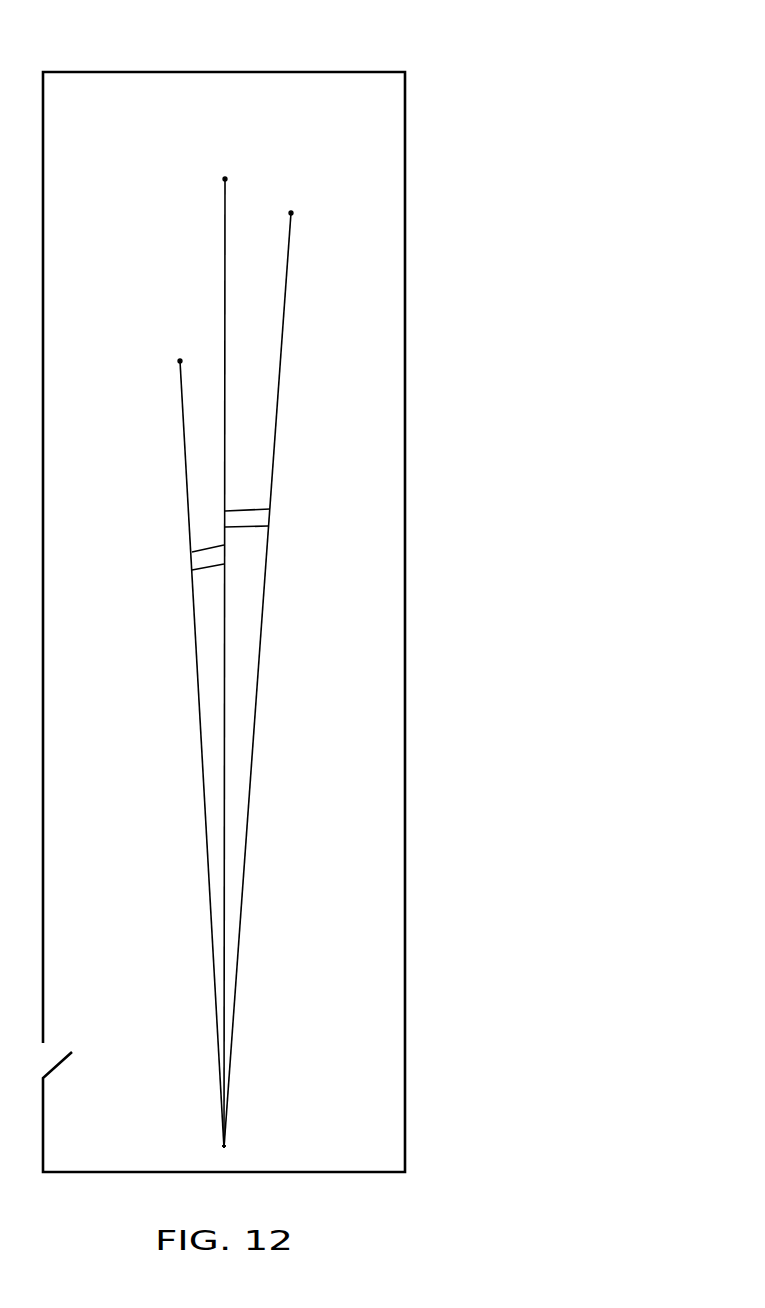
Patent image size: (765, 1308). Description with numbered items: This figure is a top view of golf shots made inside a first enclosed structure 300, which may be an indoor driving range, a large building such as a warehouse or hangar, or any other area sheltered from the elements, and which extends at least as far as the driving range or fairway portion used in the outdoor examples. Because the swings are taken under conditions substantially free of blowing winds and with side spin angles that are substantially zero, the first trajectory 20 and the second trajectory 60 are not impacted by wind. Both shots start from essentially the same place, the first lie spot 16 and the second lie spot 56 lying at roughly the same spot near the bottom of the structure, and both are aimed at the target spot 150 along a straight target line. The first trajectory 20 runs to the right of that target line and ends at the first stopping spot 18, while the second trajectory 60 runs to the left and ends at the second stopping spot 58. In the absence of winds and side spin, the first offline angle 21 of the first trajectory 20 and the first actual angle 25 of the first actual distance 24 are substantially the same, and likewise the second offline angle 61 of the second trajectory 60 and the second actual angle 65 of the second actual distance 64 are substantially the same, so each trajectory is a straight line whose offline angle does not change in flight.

The first enclosed structure 300 is at (345, 100).
The target spot 150 is at (225, 179).
The first stopping spot 18 is at (295, 665).
The first trajectory 20 is at (291, 680).
The first actual distance 24 is at (282, 380).
The second stopping spot 58 is at (163, 737).
The second trajectory 60 is at (177, 754).
The second actual distance 64 is at (200, 752).
The first offline angle 21 is at (268, 530).
The first actual angle 25 is at (247, 528).
The second offline angle 61 is at (189, 563).
The second actual angle 65 is at (210, 568).
The first lie spot 16 is at (223, 1148).
The second lie spot 56 is at (224, 1148).